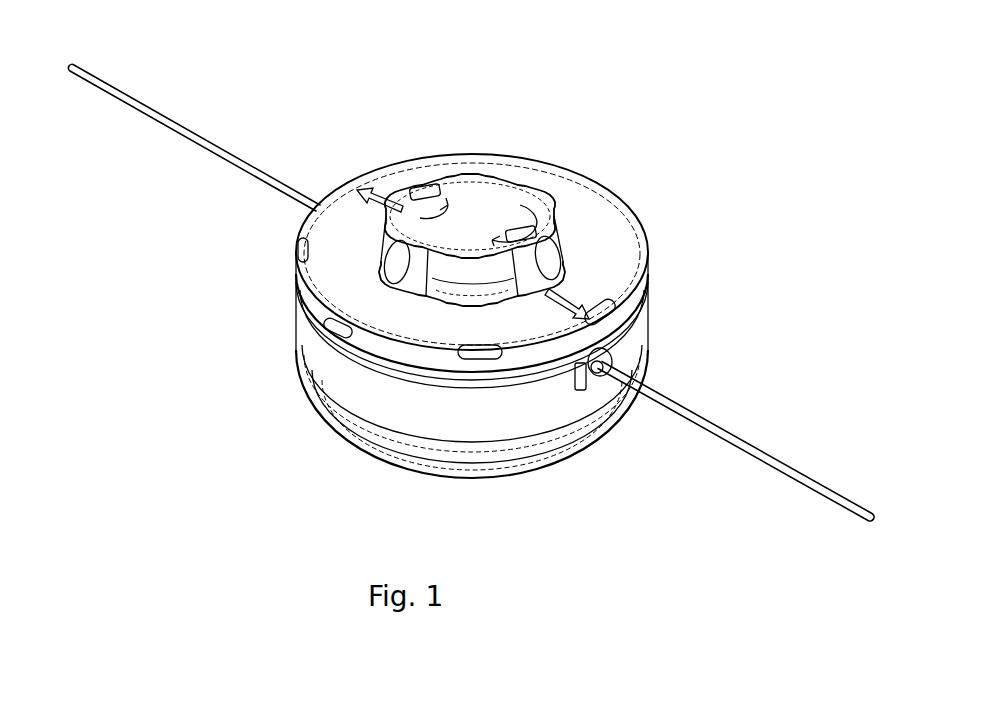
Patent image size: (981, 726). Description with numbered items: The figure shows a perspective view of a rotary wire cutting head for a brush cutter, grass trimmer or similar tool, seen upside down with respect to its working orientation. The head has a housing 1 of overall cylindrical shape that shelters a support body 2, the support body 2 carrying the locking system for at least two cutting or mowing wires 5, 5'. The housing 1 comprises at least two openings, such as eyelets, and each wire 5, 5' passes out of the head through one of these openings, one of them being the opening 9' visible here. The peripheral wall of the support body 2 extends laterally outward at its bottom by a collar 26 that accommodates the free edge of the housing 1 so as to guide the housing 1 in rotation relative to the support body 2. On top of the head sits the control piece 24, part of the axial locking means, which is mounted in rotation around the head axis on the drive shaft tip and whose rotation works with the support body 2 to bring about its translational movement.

The housing 1 is at (630, 346).
The support body 2 is at (603, 222).
The wire 5 is at (194, 116).
The wire 5' is at (736, 442).
The opening 9' is at (593, 469).
The control piece 24 is at (494, 205).
The collar 26 is at (393, 352).